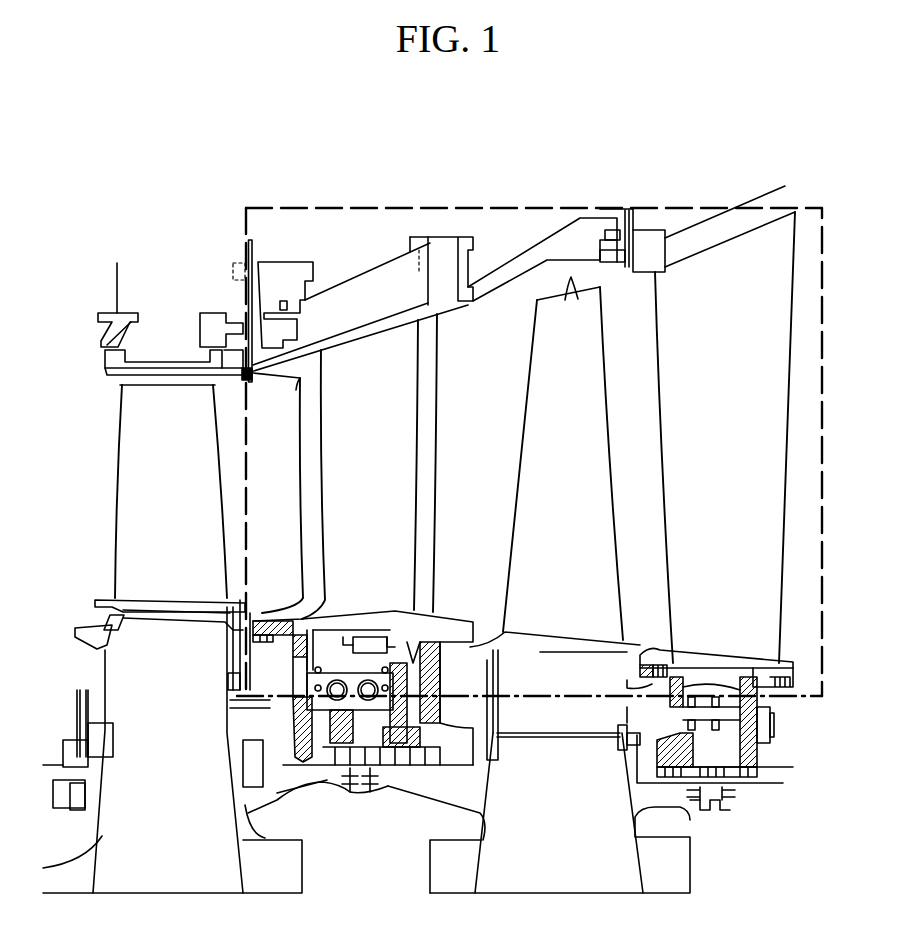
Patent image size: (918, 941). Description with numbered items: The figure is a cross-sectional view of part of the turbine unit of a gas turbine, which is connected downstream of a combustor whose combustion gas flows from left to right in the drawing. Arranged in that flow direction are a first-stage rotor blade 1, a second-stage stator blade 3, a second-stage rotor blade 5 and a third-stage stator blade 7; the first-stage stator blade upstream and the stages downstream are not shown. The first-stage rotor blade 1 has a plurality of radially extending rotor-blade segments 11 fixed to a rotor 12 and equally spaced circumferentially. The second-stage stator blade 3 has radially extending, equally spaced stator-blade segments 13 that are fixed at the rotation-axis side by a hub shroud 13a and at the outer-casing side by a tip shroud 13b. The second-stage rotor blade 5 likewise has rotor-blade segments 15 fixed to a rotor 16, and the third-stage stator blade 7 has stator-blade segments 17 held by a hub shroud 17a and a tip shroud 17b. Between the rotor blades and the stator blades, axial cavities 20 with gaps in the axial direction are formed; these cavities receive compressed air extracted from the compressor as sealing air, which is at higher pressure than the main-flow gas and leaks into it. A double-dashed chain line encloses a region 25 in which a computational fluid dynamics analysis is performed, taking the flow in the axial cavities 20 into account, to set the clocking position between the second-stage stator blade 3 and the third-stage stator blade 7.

The first-stage rotor blade 1 is at (130, 466).
The second-stage stator blade 3 is at (327, 448).
The second-stage rotor blade 5 is at (517, 455).
The third-stage stator blade 7 is at (672, 423).
The rotor-blade segments 11 is at (158, 534).
The rotor 12 is at (146, 794).
The stator-blade segments 13 is at (352, 526).
The hub shroud 13a is at (328, 598).
The tip shroud 13b is at (277, 375).
The rotor-blade segments 15 is at (551, 526).
The rotor 16 is at (551, 809).
The stator-blade segments 17 is at (712, 526).
The hub shroud 17a is at (657, 652).
The tip shroud 17b is at (639, 270).
The axial cavities 20 is at (253, 607).
The region 25 is at (344, 207).